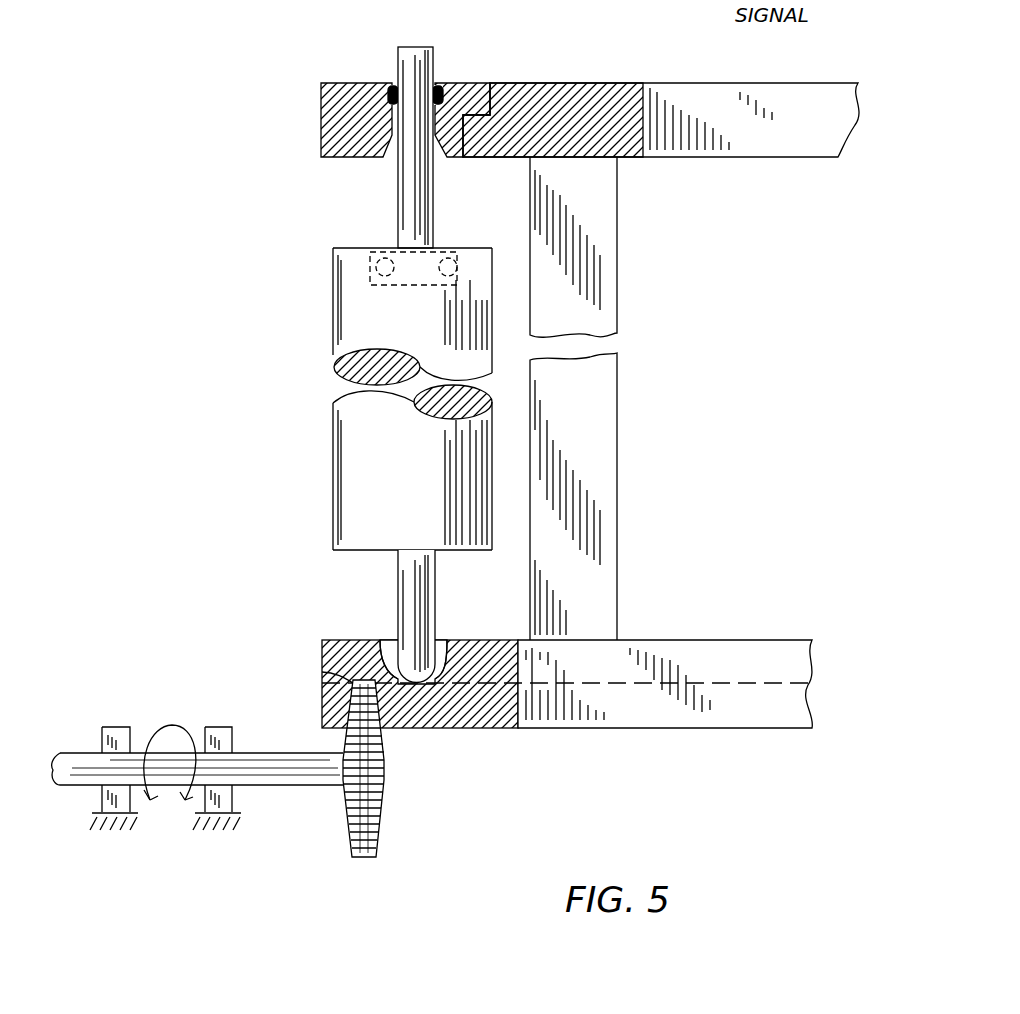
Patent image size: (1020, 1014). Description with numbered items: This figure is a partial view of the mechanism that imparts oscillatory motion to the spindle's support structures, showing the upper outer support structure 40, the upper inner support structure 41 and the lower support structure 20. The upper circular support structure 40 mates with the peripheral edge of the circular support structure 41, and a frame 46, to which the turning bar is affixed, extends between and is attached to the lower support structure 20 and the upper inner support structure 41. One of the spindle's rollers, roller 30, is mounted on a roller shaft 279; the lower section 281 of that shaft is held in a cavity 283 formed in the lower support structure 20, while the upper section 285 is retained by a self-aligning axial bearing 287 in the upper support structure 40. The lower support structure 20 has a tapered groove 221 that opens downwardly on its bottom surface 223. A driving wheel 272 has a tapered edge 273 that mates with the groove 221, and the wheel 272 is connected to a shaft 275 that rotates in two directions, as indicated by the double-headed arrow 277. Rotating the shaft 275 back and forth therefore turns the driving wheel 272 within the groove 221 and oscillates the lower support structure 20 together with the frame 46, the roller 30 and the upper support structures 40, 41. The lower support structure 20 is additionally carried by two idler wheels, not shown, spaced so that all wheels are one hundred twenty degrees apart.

The lower circular support structure 20 is at (322, 715).
The roller 30 is at (338, 330).
The upper circular support structure 40 is at (322, 127).
The circular support structure 41 is at (573, 83).
The frame 46 is at (608, 445).
The tapered groove 221 is at (322, 672).
The bottom surface 223 is at (492, 730).
The driving wheel 272 is at (385, 800).
The tapered edge 273 is at (383, 705).
The shaft 275 is at (138, 750).
The double-headed arrow 277 is at (183, 727).
The roller shaft 279 is at (398, 593).
The lower section 281 is at (443, 653).
The cavity 283 is at (390, 657).
The upper section 285 is at (434, 66).
The self-aligning axial bearing 287 is at (395, 90).